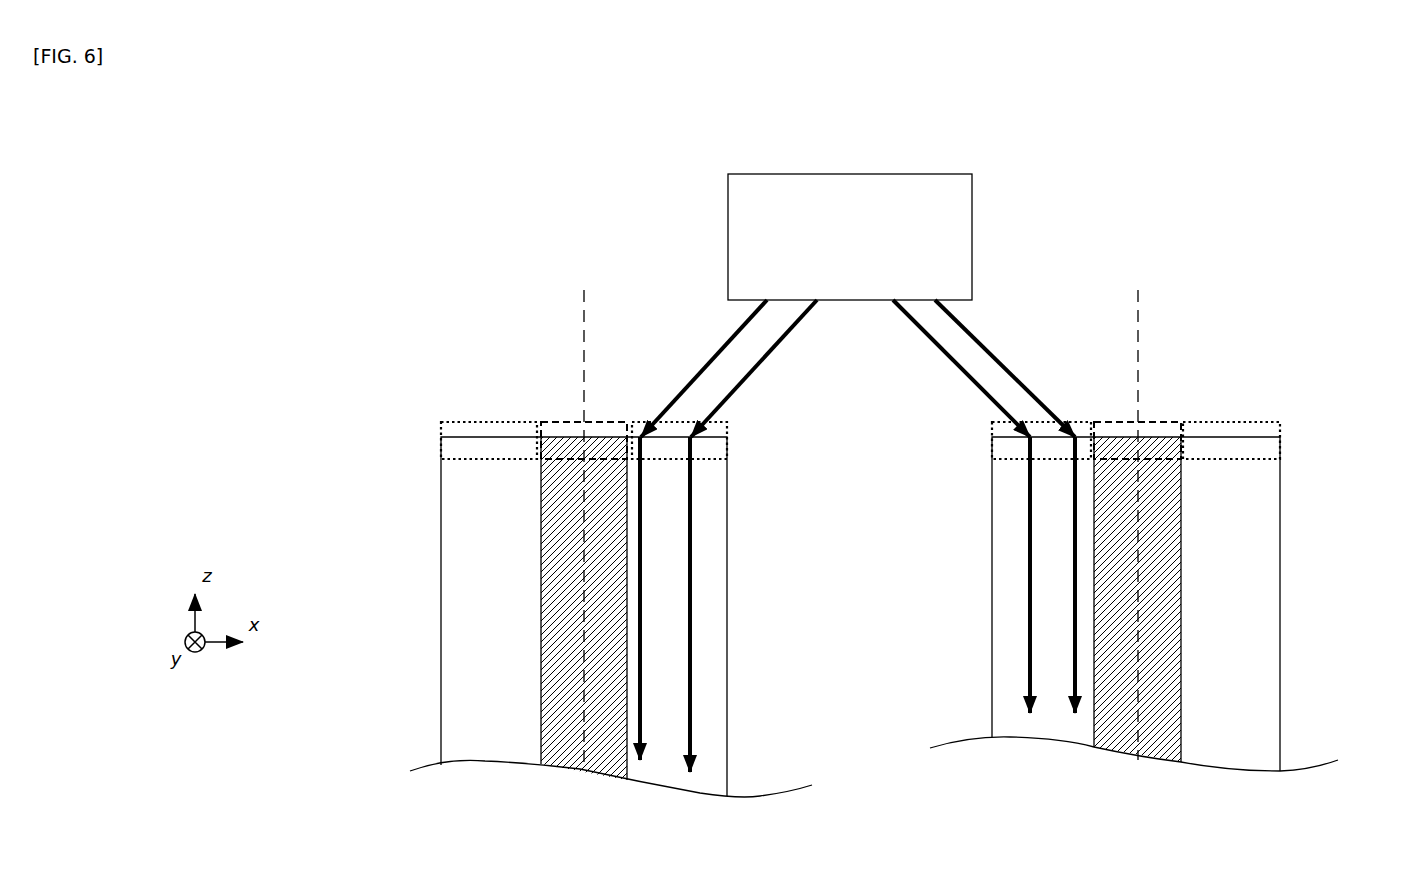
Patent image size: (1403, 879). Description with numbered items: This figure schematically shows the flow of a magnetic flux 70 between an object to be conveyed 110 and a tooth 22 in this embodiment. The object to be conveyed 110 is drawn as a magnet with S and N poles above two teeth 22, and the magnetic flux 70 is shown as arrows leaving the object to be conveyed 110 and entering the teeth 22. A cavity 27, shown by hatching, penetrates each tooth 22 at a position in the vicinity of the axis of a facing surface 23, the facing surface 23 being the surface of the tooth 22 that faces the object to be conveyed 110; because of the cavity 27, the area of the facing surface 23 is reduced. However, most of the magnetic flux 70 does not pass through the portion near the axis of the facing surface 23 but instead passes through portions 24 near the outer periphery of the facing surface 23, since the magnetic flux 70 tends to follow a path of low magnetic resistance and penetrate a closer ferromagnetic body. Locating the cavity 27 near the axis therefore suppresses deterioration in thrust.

The object to be conveyed 110 is at (752, 185).
The tooth 22 is at (467, 505).
The facing surface 23 is at (574, 422).
The portion 24 is at (481, 422).
The cavity 27 is at (562, 630).
The magnetic flux 70 is at (750, 370).